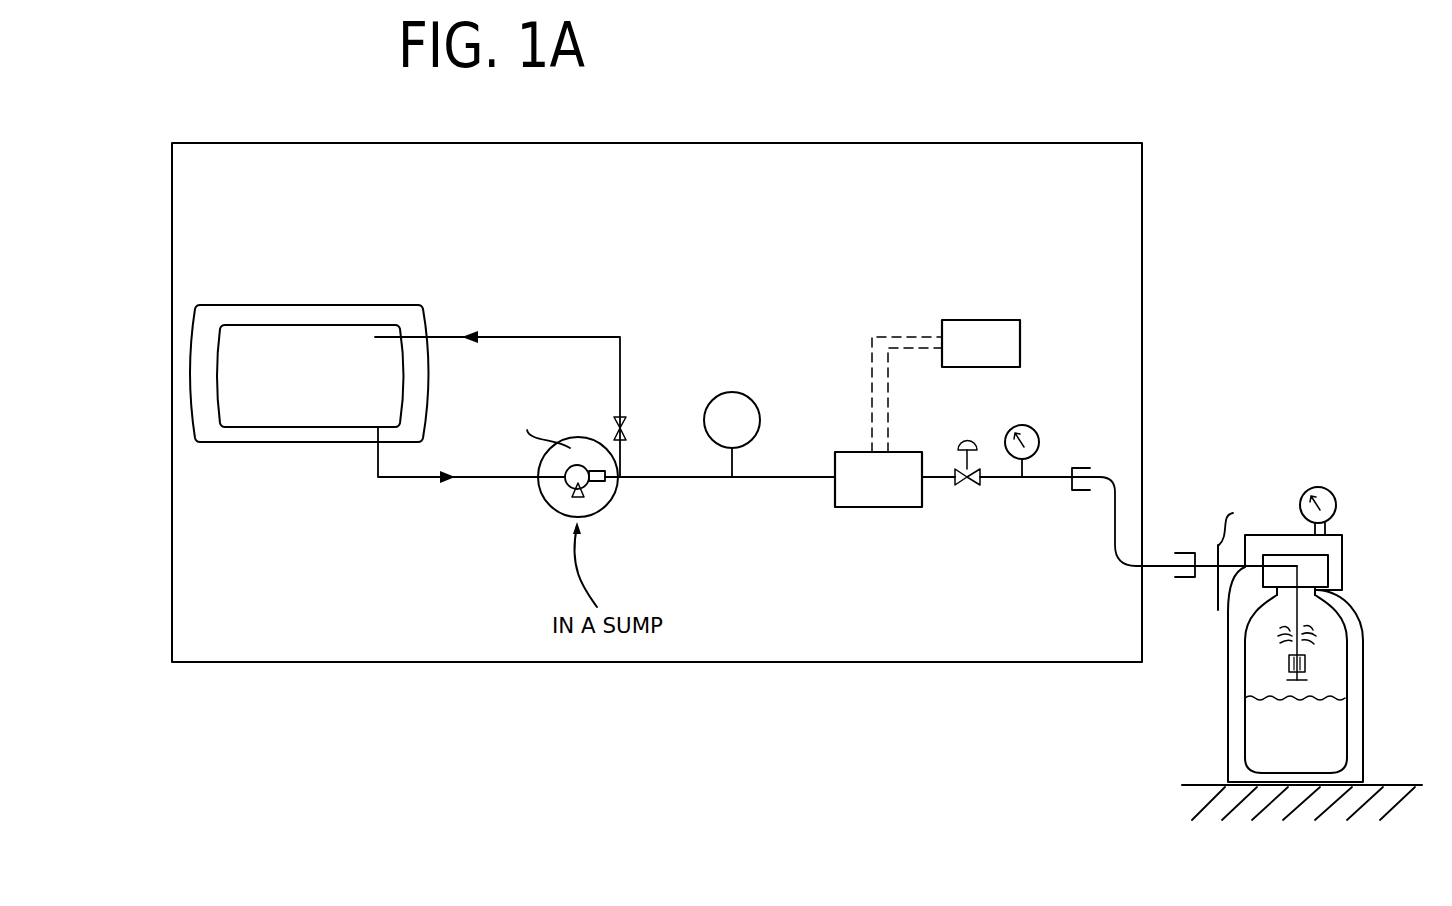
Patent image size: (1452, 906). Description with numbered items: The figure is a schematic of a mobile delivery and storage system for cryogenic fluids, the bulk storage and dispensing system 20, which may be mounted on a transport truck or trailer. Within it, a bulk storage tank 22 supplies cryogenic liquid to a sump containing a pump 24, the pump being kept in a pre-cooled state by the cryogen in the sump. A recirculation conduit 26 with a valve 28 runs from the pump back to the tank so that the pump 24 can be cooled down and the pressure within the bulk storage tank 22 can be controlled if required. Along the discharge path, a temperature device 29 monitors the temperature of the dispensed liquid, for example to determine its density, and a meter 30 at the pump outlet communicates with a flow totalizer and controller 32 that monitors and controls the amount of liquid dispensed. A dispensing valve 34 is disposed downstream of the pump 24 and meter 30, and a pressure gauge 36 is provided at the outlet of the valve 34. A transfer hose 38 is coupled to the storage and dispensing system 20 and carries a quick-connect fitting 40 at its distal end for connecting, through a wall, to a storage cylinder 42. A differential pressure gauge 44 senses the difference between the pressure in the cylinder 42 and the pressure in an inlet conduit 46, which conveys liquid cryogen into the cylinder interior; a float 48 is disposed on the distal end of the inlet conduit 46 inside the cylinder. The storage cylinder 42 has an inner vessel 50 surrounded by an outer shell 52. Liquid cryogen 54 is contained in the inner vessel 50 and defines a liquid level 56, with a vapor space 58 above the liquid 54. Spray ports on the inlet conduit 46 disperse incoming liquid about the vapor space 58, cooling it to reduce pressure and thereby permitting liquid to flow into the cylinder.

The bulk storage and dispensing system 20 is at (1198, 224).
The bulk storage tank 22 is at (362, 298).
The pump 24 is at (567, 498).
The recirculation conduit 26 is at (565, 337).
The valve 28 is at (636, 419).
The temperature device 29 is at (764, 406).
The meter 30 is at (862, 514).
The flow totalizer and controller 32 is at (1031, 339).
The dispensing valve 34 is at (964, 492).
The pressure gauge 36 is at (1049, 438).
The transfer hose 38 is at (1110, 568).
The quick-connect fitting 40 is at (1184, 578).
The storage cylinder 42 is at (1371, 574).
The differential pressure gauge 44 is at (1346, 508).
The inlet conduit 46 is at (1220, 613).
The float 48 is at (1305, 663).
The inner vessel 50 is at (1350, 764).
The outer shell 52 is at (1365, 722).
The liquid cryogen 54 is at (1312, 750).
The liquid level 56 is at (1348, 699).
The vapor space 58 is at (1278, 687).